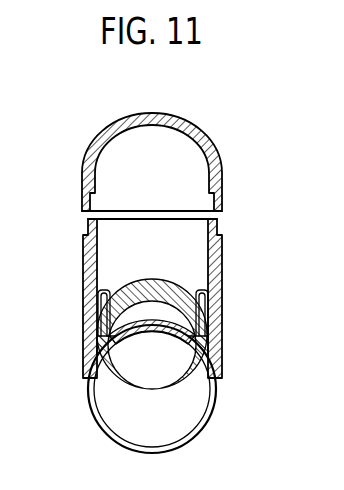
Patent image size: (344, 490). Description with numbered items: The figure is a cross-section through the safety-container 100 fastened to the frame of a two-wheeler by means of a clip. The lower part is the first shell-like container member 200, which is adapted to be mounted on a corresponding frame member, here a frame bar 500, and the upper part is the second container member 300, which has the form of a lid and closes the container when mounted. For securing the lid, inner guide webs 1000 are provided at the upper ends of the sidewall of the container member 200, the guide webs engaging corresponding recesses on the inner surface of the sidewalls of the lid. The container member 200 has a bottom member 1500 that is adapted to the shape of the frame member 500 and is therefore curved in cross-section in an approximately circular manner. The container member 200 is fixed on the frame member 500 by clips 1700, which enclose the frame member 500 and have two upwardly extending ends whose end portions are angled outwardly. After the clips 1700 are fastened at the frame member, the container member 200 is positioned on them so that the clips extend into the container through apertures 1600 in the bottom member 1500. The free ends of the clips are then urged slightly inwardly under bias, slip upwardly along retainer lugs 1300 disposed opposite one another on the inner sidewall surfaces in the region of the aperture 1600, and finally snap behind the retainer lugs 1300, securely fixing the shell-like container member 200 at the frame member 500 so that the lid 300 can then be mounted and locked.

The catheter connector assembly 100 is at (266, 171).
The first shell-like container member 200 is at (222, 262).
The second container member 300 is at (202, 137).
The frame bar 500 is at (214, 396).
The inner guide webs 1000 is at (214, 221).
The retainer lugs 1300 is at (88, 308).
The bottom member 1500 is at (160, 321).
The apertures 1600 is at (88, 358).
The clips 1700 is at (107, 290).